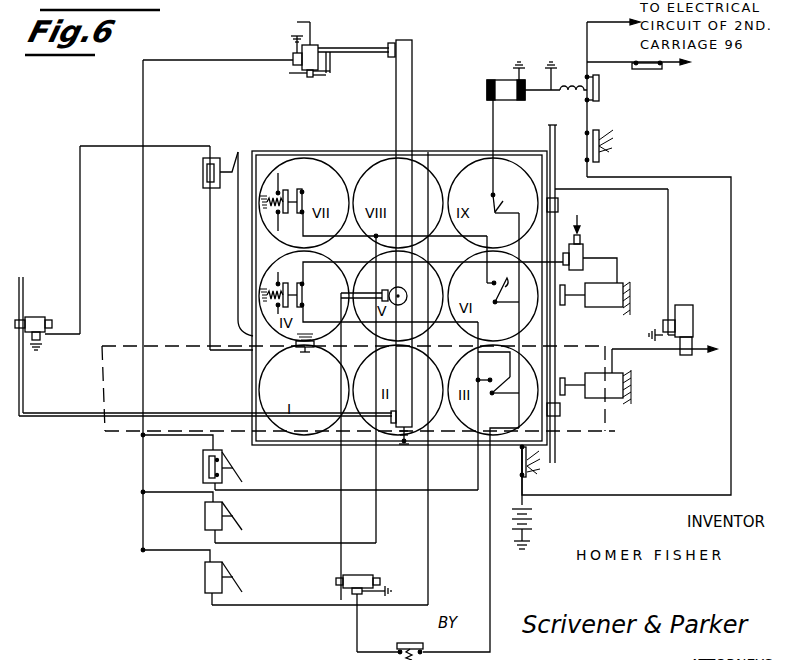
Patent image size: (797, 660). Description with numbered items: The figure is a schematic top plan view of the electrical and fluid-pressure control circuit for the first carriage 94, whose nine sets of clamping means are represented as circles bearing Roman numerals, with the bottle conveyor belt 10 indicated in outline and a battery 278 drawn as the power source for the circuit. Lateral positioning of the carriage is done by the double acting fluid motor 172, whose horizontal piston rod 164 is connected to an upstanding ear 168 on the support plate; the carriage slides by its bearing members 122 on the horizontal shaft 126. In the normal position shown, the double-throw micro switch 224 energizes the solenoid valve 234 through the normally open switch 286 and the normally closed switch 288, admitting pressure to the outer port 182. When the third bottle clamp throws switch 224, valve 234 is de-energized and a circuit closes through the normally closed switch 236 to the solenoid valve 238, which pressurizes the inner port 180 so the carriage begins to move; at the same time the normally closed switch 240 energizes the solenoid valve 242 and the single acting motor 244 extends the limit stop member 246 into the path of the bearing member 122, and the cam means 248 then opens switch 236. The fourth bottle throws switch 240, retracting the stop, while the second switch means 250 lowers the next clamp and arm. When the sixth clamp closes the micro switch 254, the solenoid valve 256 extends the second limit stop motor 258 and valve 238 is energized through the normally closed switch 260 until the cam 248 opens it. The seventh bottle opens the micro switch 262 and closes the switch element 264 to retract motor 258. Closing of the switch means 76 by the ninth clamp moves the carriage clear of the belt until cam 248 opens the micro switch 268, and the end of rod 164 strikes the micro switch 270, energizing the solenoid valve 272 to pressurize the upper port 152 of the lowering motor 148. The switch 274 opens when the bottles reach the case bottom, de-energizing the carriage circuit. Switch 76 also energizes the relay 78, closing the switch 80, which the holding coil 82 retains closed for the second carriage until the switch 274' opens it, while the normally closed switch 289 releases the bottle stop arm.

The bottle conveyor belt 10 is at (133, 346).
The switch means 76 is at (497, 212).
The relay 78 is at (490, 80).
The switch 80 is at (600, 88).
The holding coil 82 is at (568, 96).
The carriage 94 is at (310, 148).
The bearing members 122 is at (559, 206).
The horizontal shaft 126 is at (550, 128).
The double acting fluid motor 148 is at (407, 289).
The upper port 152 is at (386, 286).
The horizontal piston rod 164 is at (400, 433).
The upstanding ear 168 is at (403, 445).
The double acting fluid motor 172 is at (396, 123).
The inner port 180 is at (390, 55).
The outer port 182 is at (391, 420).
The micro switch 224 is at (513, 372).
The solenoid valve 234 is at (42, 317).
The normally closed switch 236 is at (203, 462).
The solenoid valve 238 is at (293, 58).
The normally closed switch 240 is at (303, 295).
The solenoid valve 242 is at (583, 252).
The single acting motor 244 is at (624, 298).
The limit stop member 246 is at (563, 305).
The cam means 248 is at (238, 265).
The second switch means 250 is at (279, 284).
The micro switch 254 is at (505, 277).
The solenoid valve 256 is at (687, 305).
The second limit stop motor 258 is at (602, 398).
The normally closed switch 260 is at (205, 514).
The micro switch 262 is at (303, 192).
The switch element 264 is at (279, 190).
The micro switch 268 is at (205, 574).
The micro switch 270 is at (410, 643).
The solenoid valve 272 is at (356, 575).
The switch 274 is at (548, 475).
The switch 274' is at (619, 146).
The battery 278 is at (533, 511).
The normally open switch 286 is at (305, 353).
The normally closed switch 288 is at (203, 172).
The normally closed switch 289 is at (656, 70).